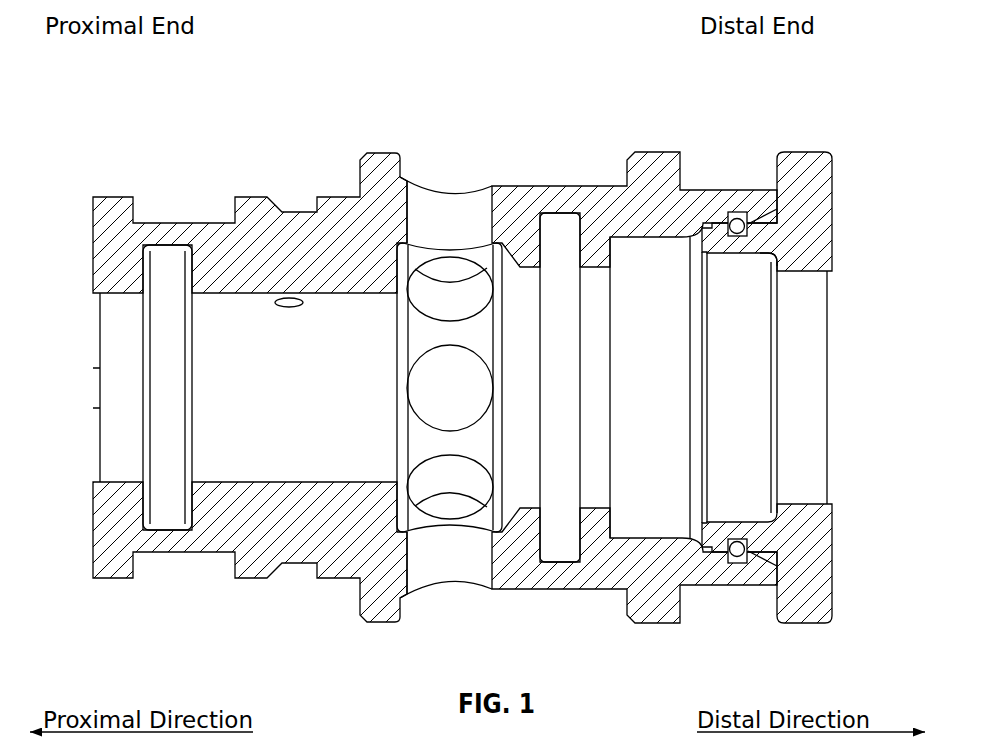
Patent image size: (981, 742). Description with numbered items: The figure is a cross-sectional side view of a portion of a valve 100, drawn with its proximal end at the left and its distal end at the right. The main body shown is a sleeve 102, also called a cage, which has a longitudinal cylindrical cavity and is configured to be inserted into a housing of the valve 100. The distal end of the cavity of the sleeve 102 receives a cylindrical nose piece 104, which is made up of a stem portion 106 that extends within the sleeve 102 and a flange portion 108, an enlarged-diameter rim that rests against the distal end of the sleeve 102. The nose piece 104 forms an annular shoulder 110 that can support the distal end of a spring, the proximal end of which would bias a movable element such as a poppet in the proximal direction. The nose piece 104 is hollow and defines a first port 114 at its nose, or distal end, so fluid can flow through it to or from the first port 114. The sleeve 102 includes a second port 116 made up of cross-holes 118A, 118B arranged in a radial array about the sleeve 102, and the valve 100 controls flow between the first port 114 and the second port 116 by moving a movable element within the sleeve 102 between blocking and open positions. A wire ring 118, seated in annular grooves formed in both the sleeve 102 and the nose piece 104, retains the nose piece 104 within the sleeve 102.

The valve 100 is at (72, 233).
The sleeve 102 is at (560, 177).
The nose piece 104 is at (840, 180).
The stem portion 106 is at (752, 555).
The flange portion 108 is at (813, 588).
The annular shoulder 110 is at (765, 266).
The first port 114 is at (845, 397).
The second port 116 is at (471, 118).
The wire ring 118 is at (734, 207).
The cross-hole 118A is at (434, 191).
The cross-hole 118B is at (463, 588).